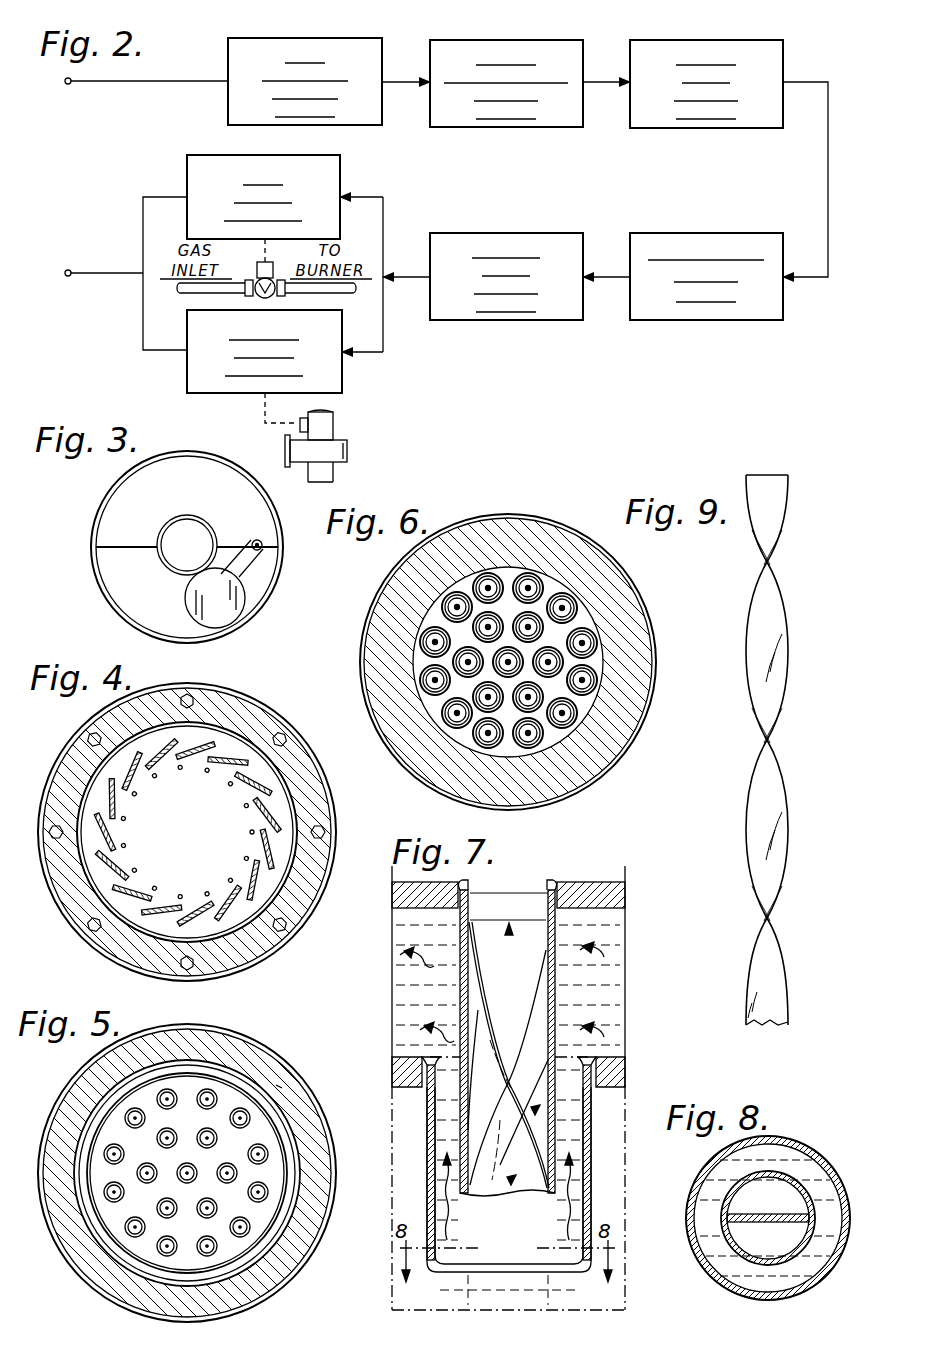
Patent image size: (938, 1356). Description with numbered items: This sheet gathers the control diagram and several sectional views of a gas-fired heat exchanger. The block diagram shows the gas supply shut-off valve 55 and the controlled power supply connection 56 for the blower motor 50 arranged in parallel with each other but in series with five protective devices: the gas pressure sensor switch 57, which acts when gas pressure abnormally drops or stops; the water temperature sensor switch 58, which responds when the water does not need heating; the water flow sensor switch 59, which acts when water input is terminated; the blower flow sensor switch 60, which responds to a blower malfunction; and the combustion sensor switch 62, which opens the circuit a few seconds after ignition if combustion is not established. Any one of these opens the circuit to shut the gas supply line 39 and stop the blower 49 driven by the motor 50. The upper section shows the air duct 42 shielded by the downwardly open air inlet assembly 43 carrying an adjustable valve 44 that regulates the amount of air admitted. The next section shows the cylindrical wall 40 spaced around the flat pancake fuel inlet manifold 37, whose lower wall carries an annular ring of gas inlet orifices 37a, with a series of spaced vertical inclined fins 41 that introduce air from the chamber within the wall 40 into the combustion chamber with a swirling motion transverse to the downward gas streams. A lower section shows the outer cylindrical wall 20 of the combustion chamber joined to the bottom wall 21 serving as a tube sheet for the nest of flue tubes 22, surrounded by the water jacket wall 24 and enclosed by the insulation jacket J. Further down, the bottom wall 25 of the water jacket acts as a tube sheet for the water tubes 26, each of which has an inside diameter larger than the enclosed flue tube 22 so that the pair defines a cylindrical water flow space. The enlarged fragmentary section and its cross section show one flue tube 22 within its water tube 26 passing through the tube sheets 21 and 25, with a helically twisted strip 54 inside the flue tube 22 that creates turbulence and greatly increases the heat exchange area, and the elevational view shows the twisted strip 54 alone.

In FIG. 5, the outer cylindrical wall 20 is at (78, 1100).
In FIG. 5, the bottom wall 21 is at (96, 1152).
In FIG. 7, the bottom wall 21 is at (588, 882).
In FIG. 5, the flue tubes 22 is at (267, 1152).
In FIG. 6, the flue tubes 22 is at (568, 600).
In FIG. 7, the flue tubes 22 is at (556, 1002).
In FIG. 8, the flue tubes 22 is at (808, 1195).
In FIG. 5, the water jacket wall 24 is at (86, 1120).
In FIG. 7, the bottom wall 25 is at (608, 1073).
In FIG. 6, the water tubes 26 is at (598, 678).
In FIG. 7, the water tubes 26 is at (592, 1156).
In FIG. 8, the water tubes 26 is at (803, 1152).
In FIG. 4, the fuel inlet manifold 37 is at (198, 828).
In FIG. 4, the gas inlet orifices 37a is at (140, 895).
In FIG. 2, the gas supply line 39 is at (350, 295).
In FIG. 4, the cylindrical wall 40 is at (82, 768).
In FIG. 4, the inclined fins 41 is at (252, 772).
In FIG. 3, the air duct 42 is at (182, 516).
In FIG. 3, the air inlet assembly 43 is at (283, 560).
In FIG. 3, the adjustable valve 44 is at (185, 598).
In FIG. 2, the blower 49 is at (347, 452).
In FIG. 2, the motor 50 is at (336, 424).
In FIG. 7, the helically twisted strip 54 is at (508, 1040).
In FIG. 8, the helically twisted strip 54 is at (745, 1226).
In FIG. 9, the helically twisted strip 54 is at (789, 647).
In FIG. 2, the gas supply shut-off valve 55 is at (194, 155).
In FIG. 2, the controlled power supply connection 56 is at (342, 392).
In FIG. 2, the gas pressure sensor switch 57 is at (343, 40).
In FIG. 2, the water temperature sensor switch 58 is at (538, 41).
In FIG. 2, the water flow sensor switch 59 is at (732, 41).
In FIG. 2, the blower flow sensor switch 60 is at (512, 233).
In FIG. 2, the combustion sensor switch 62 is at (702, 233).
In FIG. 4, the insulation jacket J is at (305, 775).
In FIG. 5, the insulation jacket J is at (280, 1085).
In FIG. 6, the insulation jacket J is at (615, 600).